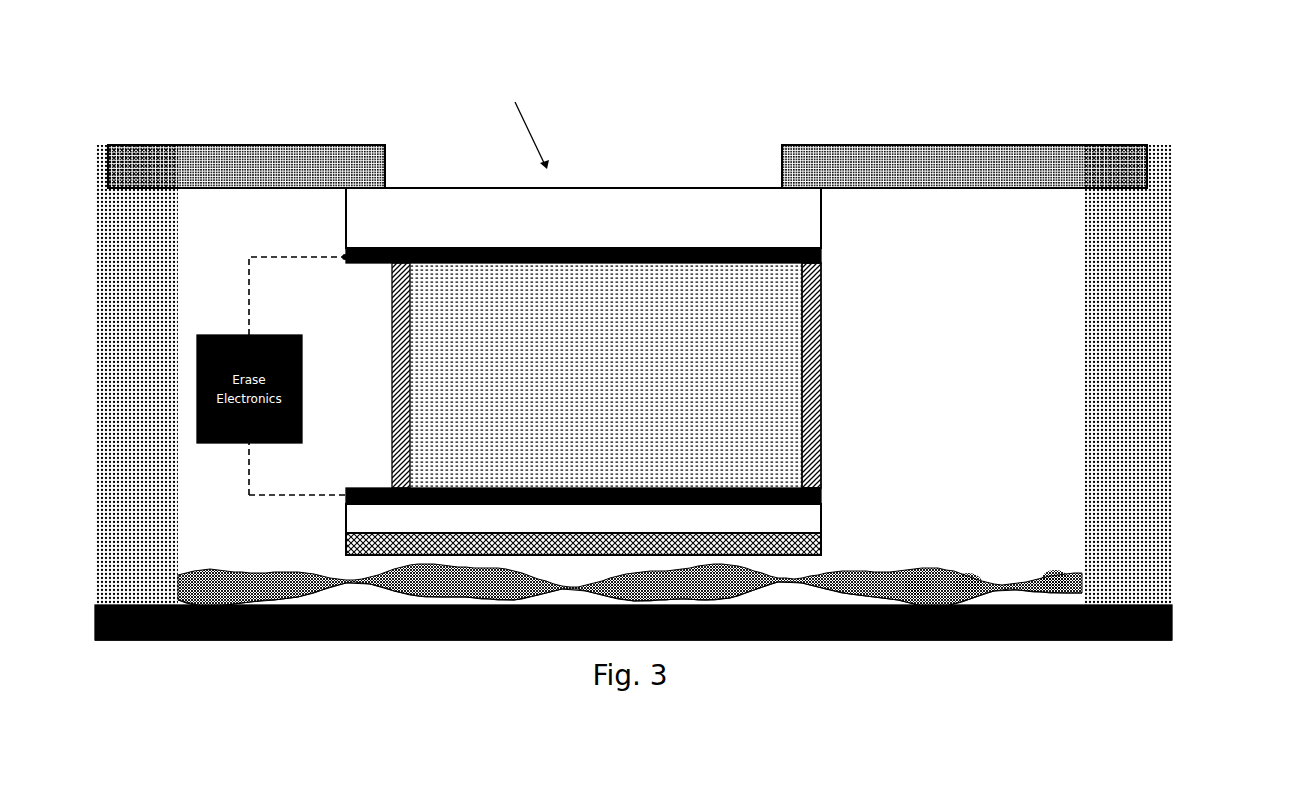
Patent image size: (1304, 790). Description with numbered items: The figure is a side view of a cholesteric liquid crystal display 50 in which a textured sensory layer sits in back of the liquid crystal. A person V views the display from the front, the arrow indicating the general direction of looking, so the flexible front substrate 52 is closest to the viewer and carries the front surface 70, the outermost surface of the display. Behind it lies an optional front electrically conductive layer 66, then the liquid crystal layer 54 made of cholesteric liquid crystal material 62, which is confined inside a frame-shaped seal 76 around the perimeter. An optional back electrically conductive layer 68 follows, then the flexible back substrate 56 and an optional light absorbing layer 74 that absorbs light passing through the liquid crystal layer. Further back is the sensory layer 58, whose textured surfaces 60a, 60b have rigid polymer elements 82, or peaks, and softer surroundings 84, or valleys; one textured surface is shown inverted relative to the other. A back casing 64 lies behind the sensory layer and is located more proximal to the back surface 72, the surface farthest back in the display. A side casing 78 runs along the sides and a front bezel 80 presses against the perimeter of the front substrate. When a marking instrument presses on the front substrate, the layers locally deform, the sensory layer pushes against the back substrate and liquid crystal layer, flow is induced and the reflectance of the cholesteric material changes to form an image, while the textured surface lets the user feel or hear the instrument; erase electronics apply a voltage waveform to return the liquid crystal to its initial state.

The cholesteric liquid crystal display 50 is at (1275, 157).
The flexible front substrate 52 is at (775, 216).
The liquid crystal layer 54 is at (755, 346).
The flexible back substrate 56 is at (770, 518).
The sensory layer 58 is at (1047, 563).
The textured surface 60a is at (1082, 573).
The textured surface 60b is at (1082, 593).
The cholesteric liquid crystal material 62 is at (822, 394).
The back casing 64 is at (1172, 618).
The front electrically conductive layer 66 is at (822, 254).
The back electrically conductive layer 68 is at (822, 495).
The front surface 70 is at (715, 187).
The back surface 72 is at (1042, 640).
The light absorbing layer 74 is at (822, 546).
The seal 76 is at (822, 300).
The side casing 78 is at (1172, 363).
The front bezel 80 is at (922, 144).
The elements of the sensory layer 82 is at (955, 563).
The surroundings of the elements 84 is at (910, 583).
The person viewing the display V is at (530, 122).